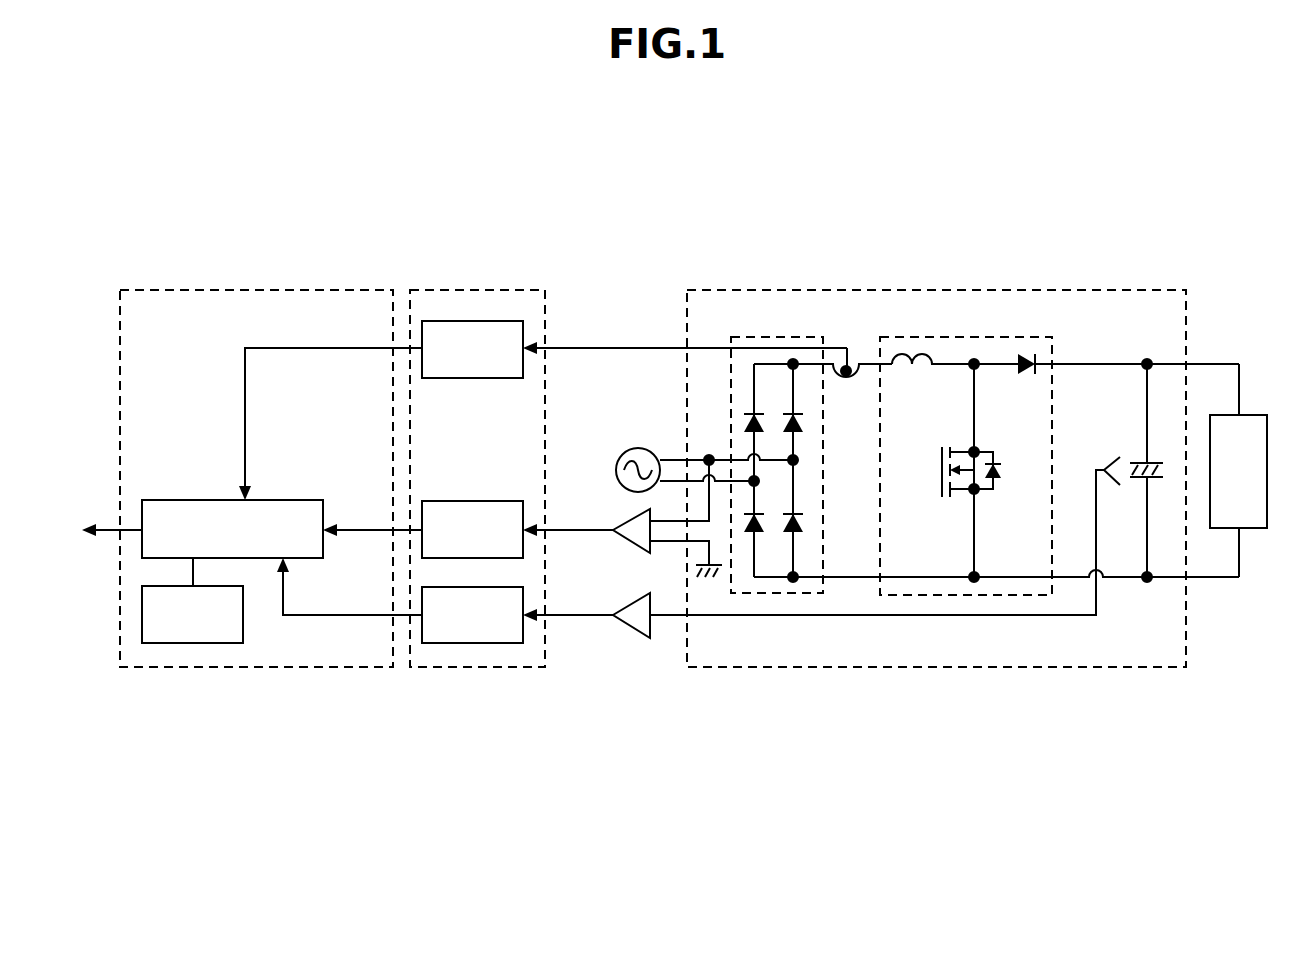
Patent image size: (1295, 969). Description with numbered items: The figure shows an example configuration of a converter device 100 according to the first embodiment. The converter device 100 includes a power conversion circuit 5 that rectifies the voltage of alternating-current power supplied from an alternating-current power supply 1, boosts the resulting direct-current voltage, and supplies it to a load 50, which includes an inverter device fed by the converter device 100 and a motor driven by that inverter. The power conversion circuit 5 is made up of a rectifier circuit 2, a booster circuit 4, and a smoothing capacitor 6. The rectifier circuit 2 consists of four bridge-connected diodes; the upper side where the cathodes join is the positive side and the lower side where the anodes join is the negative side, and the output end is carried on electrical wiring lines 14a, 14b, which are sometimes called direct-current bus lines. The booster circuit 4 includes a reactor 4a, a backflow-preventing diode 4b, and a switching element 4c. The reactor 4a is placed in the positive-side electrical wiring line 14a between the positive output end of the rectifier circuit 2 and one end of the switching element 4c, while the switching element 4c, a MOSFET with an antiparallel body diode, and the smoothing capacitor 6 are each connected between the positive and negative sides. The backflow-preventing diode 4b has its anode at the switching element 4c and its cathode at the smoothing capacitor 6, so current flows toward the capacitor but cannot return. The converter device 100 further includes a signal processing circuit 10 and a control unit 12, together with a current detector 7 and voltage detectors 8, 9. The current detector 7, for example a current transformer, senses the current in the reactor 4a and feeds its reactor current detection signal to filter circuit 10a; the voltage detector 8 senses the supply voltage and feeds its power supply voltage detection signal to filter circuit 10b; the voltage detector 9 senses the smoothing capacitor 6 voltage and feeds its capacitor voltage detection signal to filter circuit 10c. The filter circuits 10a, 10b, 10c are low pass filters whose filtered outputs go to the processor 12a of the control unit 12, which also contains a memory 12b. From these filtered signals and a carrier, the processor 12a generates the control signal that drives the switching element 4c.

The converter device 100 is at (962, 176).
The alternating-current power supply 1 is at (626, 449).
The rectifier circuit 2 is at (782, 337).
The booster circuit 4 is at (1040, 337).
The reactor 4a is at (918, 360).
The backflow-preventing diode 4b is at (1020, 358).
The switching element 4c is at (956, 502).
The power conversion circuit 5 is at (1150, 290).
The smoothing capacitor 6 is at (1137, 460).
The current detector 7 is at (848, 366).
The voltage detector 8 is at (632, 548).
The voltage detector 9 is at (632, 633).
The signal processing circuit 10 is at (516, 290).
The filter circuit 10a is at (465, 321).
The filter circuit 10b is at (465, 501).
The filter circuit 10c is at (465, 587).
The control unit 12 is at (302, 290).
The processor 12a is at (260, 500).
The memory 12b is at (202, 586).
The electrical wiring line 14a is at (868, 378).
The electrical wiring line 14b is at (862, 577).
The load 50 is at (1248, 414).